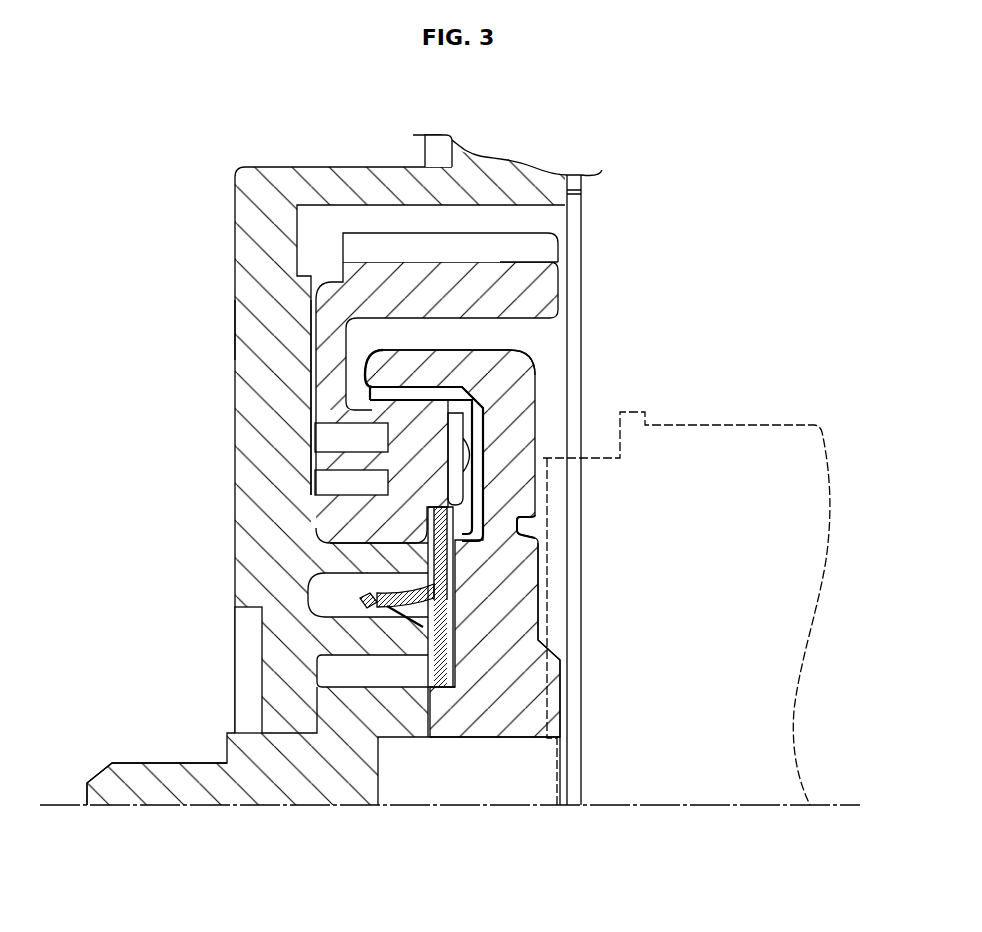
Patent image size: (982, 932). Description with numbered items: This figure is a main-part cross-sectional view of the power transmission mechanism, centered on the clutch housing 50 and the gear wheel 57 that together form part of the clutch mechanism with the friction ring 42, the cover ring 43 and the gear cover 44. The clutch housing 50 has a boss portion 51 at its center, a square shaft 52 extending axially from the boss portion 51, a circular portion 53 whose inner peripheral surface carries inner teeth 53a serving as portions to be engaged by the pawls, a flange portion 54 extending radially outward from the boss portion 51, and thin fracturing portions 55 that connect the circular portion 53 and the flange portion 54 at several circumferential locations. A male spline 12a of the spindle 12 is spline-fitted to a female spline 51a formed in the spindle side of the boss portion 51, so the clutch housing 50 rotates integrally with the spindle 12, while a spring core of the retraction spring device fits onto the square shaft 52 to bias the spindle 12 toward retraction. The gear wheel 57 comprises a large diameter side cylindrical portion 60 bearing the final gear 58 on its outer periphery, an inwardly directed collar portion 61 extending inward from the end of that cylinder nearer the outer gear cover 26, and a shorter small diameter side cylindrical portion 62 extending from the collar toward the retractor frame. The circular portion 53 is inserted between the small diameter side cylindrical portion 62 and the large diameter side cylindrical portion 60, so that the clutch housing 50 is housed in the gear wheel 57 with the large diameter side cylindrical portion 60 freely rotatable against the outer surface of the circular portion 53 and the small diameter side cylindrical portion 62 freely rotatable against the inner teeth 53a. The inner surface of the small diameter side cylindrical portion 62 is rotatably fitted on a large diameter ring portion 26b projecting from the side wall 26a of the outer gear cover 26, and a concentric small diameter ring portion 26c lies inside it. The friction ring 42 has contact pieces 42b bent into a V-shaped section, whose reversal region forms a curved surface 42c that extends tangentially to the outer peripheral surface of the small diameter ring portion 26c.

The spindle 12 is at (814, 418).
The male spline 12a is at (545, 728).
The outer gear cover 26 is at (280, 163).
The side wall 26a is at (247, 330).
The large diameter ring portion 26b is at (365, 563).
The small diameter ring portion 26c is at (372, 713).
The friction ring 42 is at (460, 562).
The contact piece 42b is at (363, 602).
The curved surface 42c is at (400, 648).
The cover ring 43 is at (462, 443).
The gear cover 44 is at (583, 202).
The clutch housing 50 is at (542, 381).
The boss portion 51 is at (363, 637).
The female spline 51a is at (455, 737).
The square shaft 52 is at (142, 790).
The circular portion 53 is at (452, 367).
The inner teeth 53a is at (413, 397).
The flange portion 54 is at (500, 592).
The thin fracturing portion 55 is at (527, 533).
The gear wheel 57 is at (568, 290).
The final gear 58 is at (508, 247).
The large diameter side cylindrical portion 60 is at (530, 272).
The inwardly directed collar portion 61 is at (330, 372).
The small diameter side cylindrical portion 62 is at (388, 452).